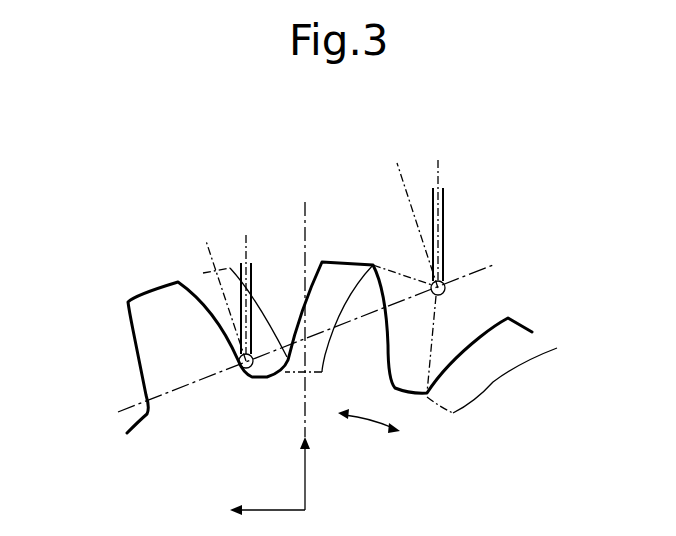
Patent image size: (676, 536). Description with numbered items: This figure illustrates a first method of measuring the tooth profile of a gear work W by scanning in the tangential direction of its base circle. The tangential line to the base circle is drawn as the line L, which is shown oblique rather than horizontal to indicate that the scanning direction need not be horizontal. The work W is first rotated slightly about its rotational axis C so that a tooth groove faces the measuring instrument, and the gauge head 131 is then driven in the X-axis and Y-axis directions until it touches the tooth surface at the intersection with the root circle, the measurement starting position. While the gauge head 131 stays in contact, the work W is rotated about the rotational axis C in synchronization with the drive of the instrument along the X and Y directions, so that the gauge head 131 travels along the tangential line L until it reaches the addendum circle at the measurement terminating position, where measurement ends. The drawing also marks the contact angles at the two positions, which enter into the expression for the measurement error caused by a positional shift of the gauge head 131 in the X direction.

The gauge head 131 is at (252, 273).
The work W is at (155, 330).
The tangential line L is at (487, 267).
The rotational axis C is at (369, 411).
The X-axis X is at (315, 472).
The Y-axis Y is at (257, 511).